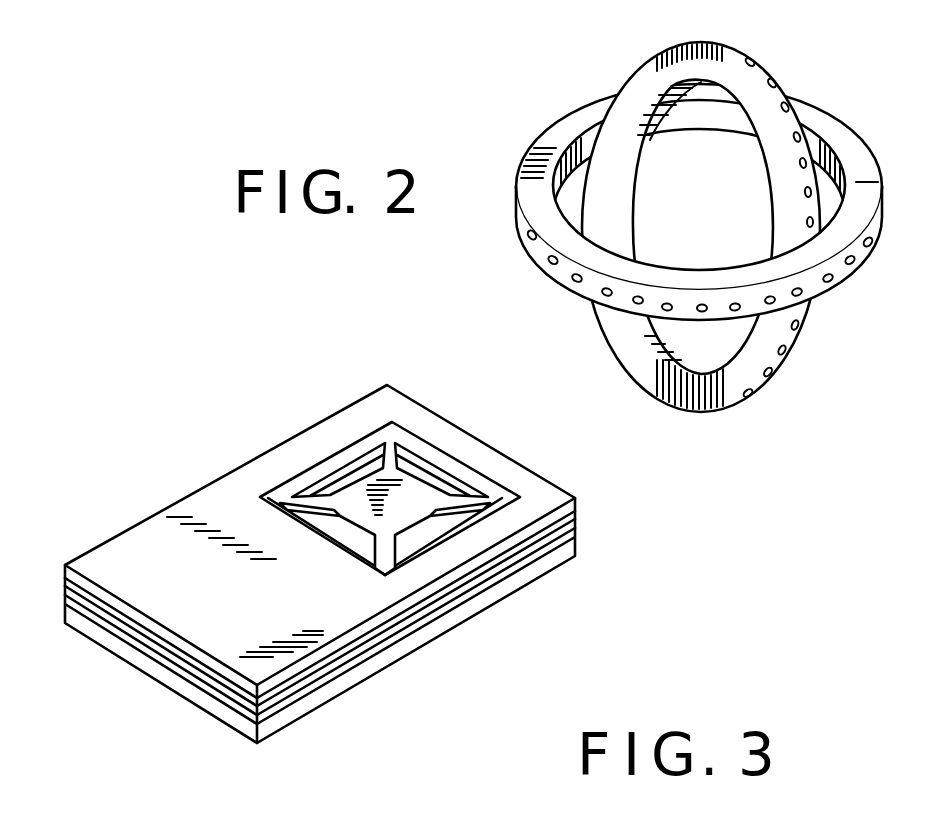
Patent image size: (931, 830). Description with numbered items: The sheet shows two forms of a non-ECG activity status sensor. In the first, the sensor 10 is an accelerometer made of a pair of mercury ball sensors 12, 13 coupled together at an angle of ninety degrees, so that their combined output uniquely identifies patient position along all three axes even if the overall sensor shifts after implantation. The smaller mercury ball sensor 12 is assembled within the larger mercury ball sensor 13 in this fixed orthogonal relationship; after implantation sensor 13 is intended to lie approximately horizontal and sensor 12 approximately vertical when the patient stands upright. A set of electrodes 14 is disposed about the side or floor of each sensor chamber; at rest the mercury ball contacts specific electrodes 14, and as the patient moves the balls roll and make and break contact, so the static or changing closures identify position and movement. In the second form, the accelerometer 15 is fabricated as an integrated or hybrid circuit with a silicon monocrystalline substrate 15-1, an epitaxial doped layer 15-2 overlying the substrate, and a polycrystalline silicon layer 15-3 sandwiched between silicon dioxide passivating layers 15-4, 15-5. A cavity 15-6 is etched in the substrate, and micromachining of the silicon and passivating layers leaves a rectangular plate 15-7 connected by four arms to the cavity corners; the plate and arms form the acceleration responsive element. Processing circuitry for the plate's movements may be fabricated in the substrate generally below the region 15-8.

In FIG. 2, the sensor 10 is at (599, 79).
In FIG. 2, the mercury ball sensor 12 is at (633, 352).
In FIG. 2, the mercury ball sensor 13 is at (530, 152).
In FIG. 2, the electrodes 14 is at (774, 82).
In FIG. 3, the accelerometer 15 is at (250, 434).
In FIG. 3, the silicon monocrystalline substrate 15-1 is at (513, 578).
In FIG. 3, the epitaxial doped layer 15-2 is at (448, 605).
In FIG. 3, the polycrystalline silicon layer 15-3 is at (120, 620).
In FIG. 3, the passivating layer 15-4 is at (160, 657).
In FIG. 3, the passivating layer 15-5 is at (205, 667).
In FIG. 3, the cavity 15-6 is at (403, 547).
In FIG. 3, the rectangular plate 15-7 is at (402, 498).
In FIG. 3, the region 15-8 is at (158, 537).